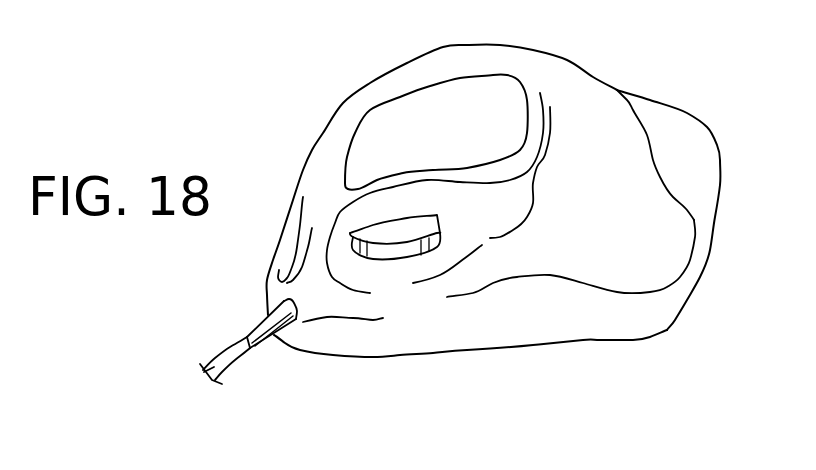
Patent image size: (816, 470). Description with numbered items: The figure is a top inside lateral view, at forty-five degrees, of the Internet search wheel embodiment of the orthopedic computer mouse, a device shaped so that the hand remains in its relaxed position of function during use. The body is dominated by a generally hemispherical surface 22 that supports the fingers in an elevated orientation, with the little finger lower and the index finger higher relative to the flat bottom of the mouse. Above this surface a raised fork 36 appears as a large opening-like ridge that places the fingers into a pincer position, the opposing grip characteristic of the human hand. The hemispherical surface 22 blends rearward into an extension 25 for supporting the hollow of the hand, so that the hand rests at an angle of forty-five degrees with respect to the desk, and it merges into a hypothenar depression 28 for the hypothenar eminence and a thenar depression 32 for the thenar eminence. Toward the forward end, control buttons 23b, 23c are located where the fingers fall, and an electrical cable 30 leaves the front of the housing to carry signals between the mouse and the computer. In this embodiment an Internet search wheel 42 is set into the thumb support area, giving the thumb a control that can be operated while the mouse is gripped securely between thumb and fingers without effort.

The generally hemispherical surface 22 is at (557, 80).
The hypothenar depression 28 is at (693, 143).
The extension 25 is at (678, 228).
The thenar depression 32 is at (663, 267).
The raised fork 36 is at (400, 127).
The control button 23b is at (280, 252).
The control button 23c is at (277, 280).
The electrical cable 30 is at (270, 295).
The Internet search wheel 42 is at (402, 252).